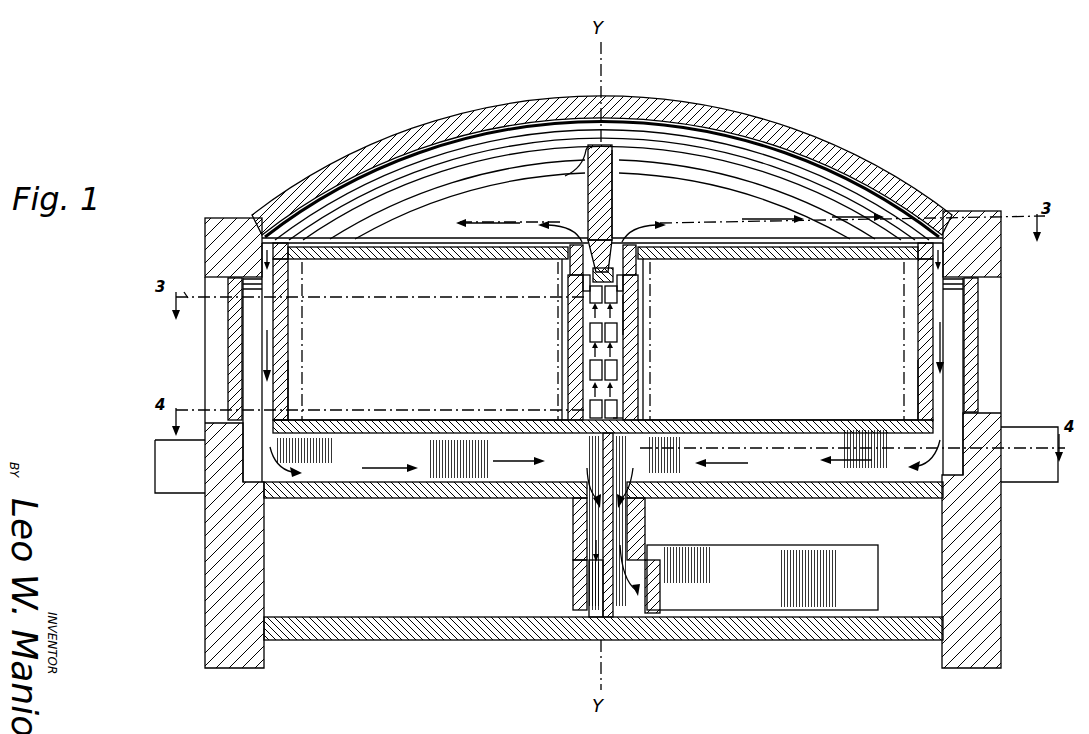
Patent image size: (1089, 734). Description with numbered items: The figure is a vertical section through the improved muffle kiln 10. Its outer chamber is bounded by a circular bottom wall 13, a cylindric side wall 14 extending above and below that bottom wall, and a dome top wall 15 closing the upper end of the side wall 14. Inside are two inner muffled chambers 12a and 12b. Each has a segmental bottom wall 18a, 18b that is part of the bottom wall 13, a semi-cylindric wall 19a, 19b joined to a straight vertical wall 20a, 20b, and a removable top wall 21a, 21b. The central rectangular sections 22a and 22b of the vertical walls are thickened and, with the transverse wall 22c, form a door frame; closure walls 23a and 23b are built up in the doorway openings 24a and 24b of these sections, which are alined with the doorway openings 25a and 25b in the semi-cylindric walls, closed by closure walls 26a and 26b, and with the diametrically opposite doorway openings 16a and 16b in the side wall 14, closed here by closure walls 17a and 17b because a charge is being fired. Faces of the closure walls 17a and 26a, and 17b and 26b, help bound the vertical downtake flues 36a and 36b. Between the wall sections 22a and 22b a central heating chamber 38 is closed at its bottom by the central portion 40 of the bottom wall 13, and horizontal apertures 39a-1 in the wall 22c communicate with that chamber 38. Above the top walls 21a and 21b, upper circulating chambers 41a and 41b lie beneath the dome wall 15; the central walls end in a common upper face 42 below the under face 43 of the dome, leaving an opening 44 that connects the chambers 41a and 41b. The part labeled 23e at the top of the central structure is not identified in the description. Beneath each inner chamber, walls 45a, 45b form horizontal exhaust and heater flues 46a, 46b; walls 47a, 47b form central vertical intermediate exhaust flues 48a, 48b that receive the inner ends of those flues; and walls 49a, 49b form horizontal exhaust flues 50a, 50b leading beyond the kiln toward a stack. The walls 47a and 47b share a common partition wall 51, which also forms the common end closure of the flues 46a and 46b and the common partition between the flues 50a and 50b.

The muffle kiln 10 is at (884, 162).
The dome top wall 15 is at (780, 124).
The cylindric side wall 14 is at (1001, 248).
The under face of dome wall 43 is at (664, 128).
The common upper face 42 is at (574, 172).
The opening 44 is at (603, 145).
The central partition column 23e is at (613, 190).
The upper circulating chamber 41a is at (516, 221).
The upper circulating chamber 41b is at (833, 216).
The top wall 21a is at (430, 260).
The top wall 21b is at (778, 260).
The doorway opening 25a is at (290, 276).
The doorway opening 25b is at (917, 278).
The semi-cylindric wall 19a is at (289, 350).
The semi-cylindric wall 19b is at (917, 330).
The closure wall 26a is at (289, 380).
The closure wall 26b is at (917, 358).
The downtake flue 36a is at (256, 327).
The downtake flue 36b is at (950, 312).
The closure wall 17a is at (229, 318).
The closure wall 17b is at (979, 310).
The doorway opening 16a is at (216, 344).
The doorway opening 16b is at (994, 352).
The inner chamber 12a is at (430, 341).
The inner chamber 12b is at (777, 341).
The straight vertical wall 20a is at (566, 350).
The straight vertical wall 20b is at (644, 353).
The central rectangular wall section 22a is at (570, 262).
The central rectangular wall section 22b is at (638, 266).
The door frame wall 22c is at (622, 316).
The closure wall 23a is at (568, 312).
The closure wall 23b is at (640, 302).
The doorway opening 24a is at (582, 284).
The doorway opening 24b is at (624, 284).
The apertures 39a-1 is at (589, 332).
The central heating chamber 38 is at (597, 392).
The central portion of bottom wall 40 is at (620, 417).
The circular bottom wall 13 is at (773, 420).
The segmental bottom wall 18a is at (447, 420).
The segmental bottom wall 18b is at (709, 420).
The flue walls 45a is at (382, 500).
The flue walls 45b is at (766, 499).
The exhaust and heater flue 46a is at (456, 499).
The exhaust and heater flue 46b is at (822, 499).
The common partition wall 51 is at (603, 460).
The intermediate flue walls 47a is at (571, 532).
The intermediate flue walls 47b is at (646, 515).
The intermediate exhaust flue 48a is at (584, 554).
The intermediate exhaust flue 48b is at (622, 538).
The exhaust flue walls 49a is at (573, 590).
The exhaust flue walls 49b is at (664, 575).
The exhaust flue 50a is at (598, 600).
The exhaust flue 50b is at (650, 595).